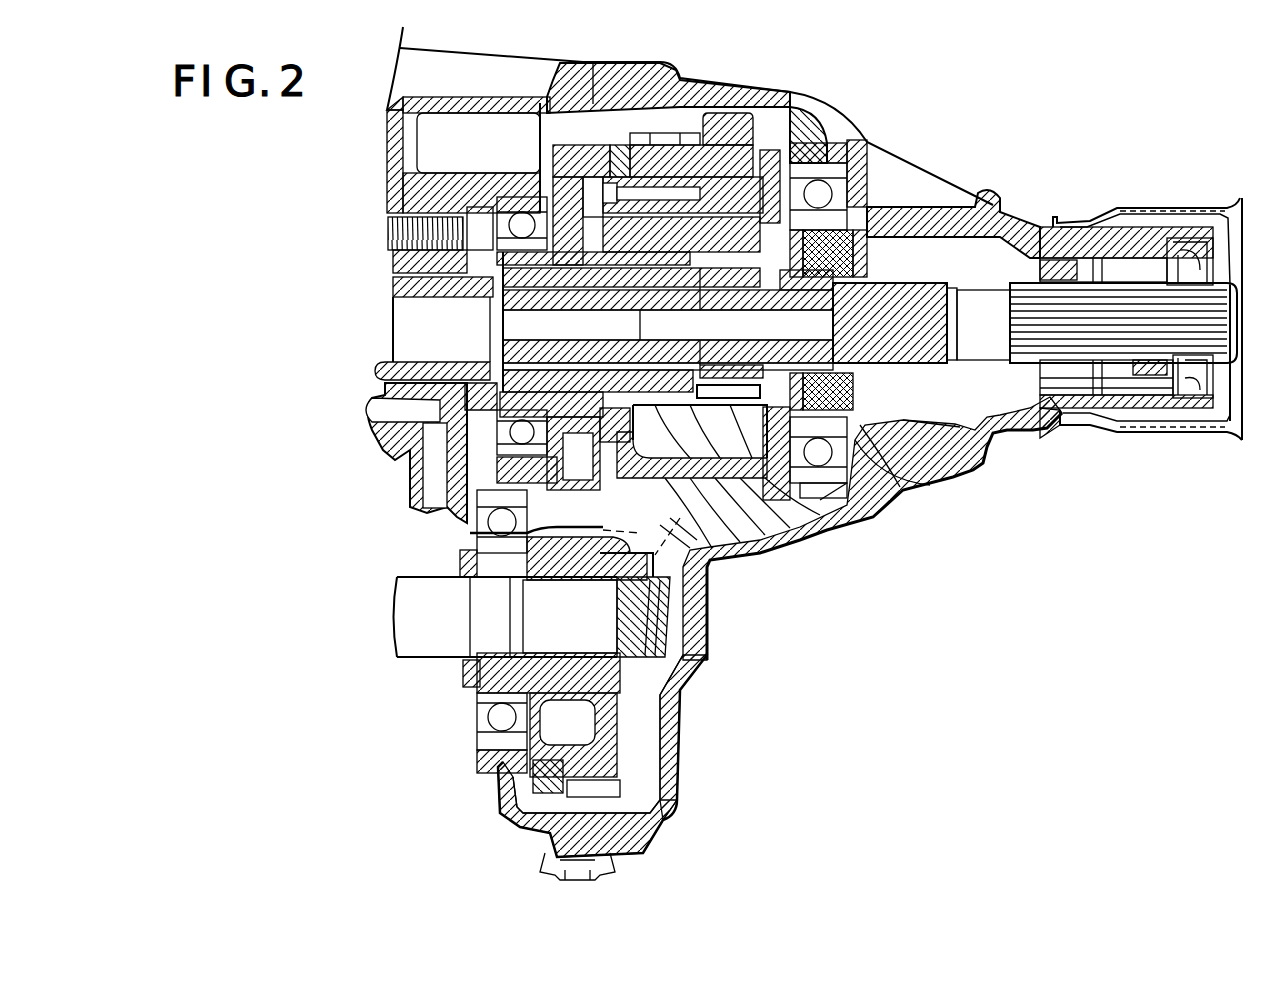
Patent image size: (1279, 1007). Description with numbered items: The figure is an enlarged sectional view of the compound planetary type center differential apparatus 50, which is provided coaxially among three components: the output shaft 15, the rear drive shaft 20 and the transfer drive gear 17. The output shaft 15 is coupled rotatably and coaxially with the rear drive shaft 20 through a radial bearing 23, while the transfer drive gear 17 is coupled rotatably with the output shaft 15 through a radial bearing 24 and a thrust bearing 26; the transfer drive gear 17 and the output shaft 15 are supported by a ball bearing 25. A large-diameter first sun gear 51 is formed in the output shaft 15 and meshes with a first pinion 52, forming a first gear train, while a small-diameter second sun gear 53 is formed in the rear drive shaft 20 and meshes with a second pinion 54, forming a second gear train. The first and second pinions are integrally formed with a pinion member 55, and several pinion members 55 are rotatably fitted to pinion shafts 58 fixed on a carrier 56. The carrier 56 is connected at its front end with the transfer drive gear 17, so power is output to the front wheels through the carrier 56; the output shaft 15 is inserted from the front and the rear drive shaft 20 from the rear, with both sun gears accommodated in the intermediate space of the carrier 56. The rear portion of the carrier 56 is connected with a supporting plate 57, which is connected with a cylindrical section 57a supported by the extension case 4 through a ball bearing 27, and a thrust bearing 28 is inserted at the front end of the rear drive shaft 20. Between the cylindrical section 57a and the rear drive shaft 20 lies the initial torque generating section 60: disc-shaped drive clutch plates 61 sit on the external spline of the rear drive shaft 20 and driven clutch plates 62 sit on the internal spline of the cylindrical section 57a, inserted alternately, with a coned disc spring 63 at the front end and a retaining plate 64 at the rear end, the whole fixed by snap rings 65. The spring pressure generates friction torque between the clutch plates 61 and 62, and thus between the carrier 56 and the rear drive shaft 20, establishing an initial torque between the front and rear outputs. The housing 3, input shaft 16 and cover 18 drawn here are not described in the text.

The housing 3 is at (485, 70).
The extension case 4 is at (953, 190).
The output shaft 15 is at (372, 372).
The input shaft 16 is at (410, 633).
The transfer drive gear 17 is at (583, 153).
The housing cover 18 is at (623, 777).
The rear drive shaft 20 is at (983, 303).
The radial bearing 23 is at (497, 360).
The radial bearing 24 is at (403, 317).
The ball bearing 25 is at (522, 197).
The thrust bearing 26 is at (700, 560).
The ball bearing 27 is at (840, 173).
The thrust bearing 28 is at (823, 163).
The center differential apparatus 50 is at (623, 118).
The first sun gear 51 is at (720, 440).
The first pinion 52 is at (670, 137).
The second sun gear 53 is at (763, 478).
The second pinion 54 is at (737, 173).
The pinion member 55 is at (713, 143).
The carrier 56 is at (690, 480).
The supporting plate 57 is at (790, 483).
The cylindrical section 57a is at (807, 500).
The pinion shaft 58 is at (770, 165).
The initial torque generating section 60 is at (980, 477).
The drive clutch plate 61 is at (867, 217).
The driven clutch plate 62 is at (880, 440).
The coned disc spring 63 is at (853, 473).
The retaining plate 64 is at (953, 450).
The snap ring 65 is at (827, 493).